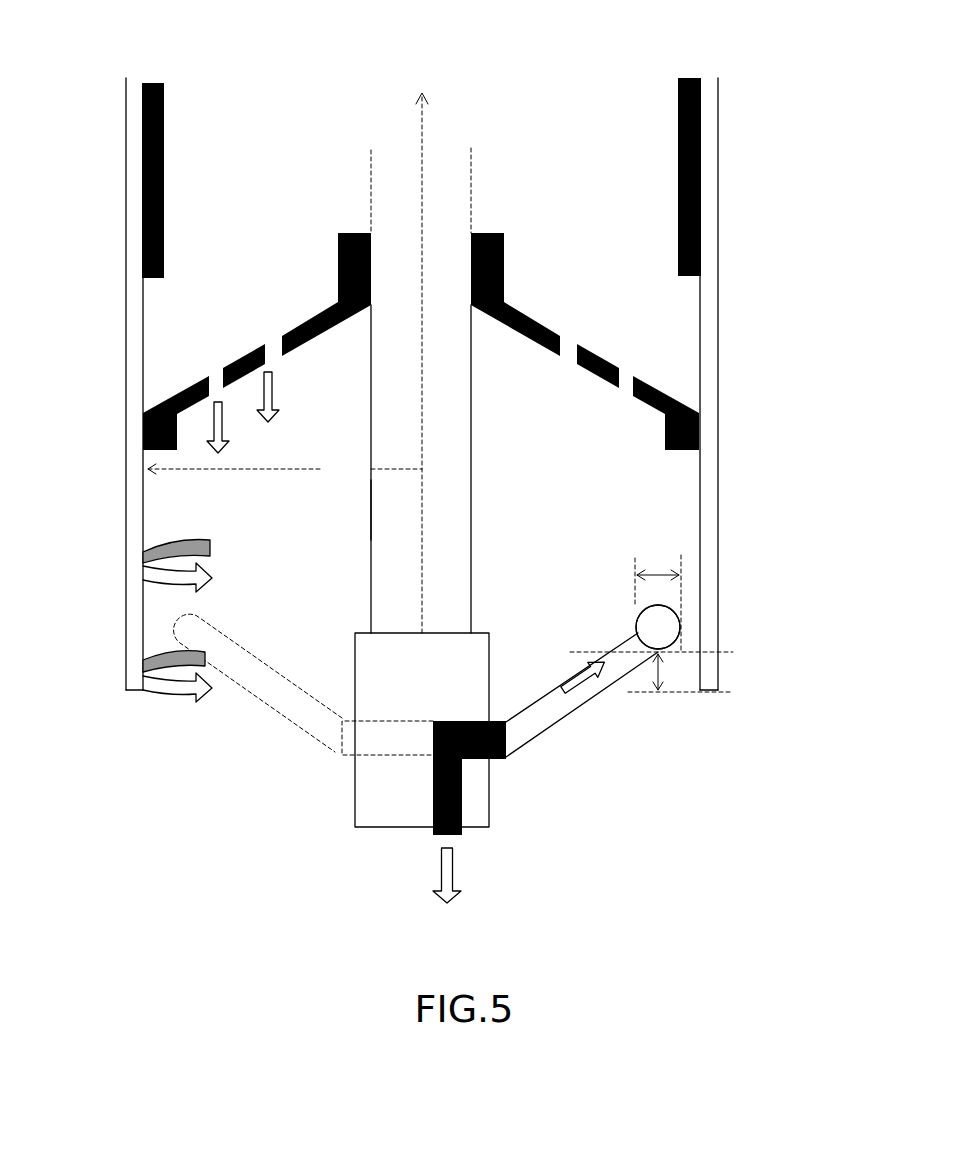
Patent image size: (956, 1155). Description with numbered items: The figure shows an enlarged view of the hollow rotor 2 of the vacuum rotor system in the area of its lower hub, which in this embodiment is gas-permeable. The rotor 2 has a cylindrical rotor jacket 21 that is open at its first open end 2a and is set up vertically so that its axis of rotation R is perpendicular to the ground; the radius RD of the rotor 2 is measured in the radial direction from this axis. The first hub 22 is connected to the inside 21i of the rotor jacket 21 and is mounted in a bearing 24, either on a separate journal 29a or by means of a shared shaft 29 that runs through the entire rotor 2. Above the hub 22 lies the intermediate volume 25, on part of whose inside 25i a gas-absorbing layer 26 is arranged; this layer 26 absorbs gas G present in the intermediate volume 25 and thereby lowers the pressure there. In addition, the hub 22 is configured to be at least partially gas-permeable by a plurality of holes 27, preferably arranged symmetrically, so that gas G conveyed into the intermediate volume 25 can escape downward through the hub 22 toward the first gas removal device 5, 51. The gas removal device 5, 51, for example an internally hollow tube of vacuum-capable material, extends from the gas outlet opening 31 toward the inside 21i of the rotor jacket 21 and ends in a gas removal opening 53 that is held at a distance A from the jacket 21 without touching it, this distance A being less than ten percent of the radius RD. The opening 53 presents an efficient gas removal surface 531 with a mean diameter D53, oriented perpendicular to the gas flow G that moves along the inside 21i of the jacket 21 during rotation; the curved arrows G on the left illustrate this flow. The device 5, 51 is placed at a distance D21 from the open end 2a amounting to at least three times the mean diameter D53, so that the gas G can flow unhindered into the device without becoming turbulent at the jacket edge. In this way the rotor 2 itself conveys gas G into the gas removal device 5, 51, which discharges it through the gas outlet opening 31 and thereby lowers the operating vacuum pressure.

The hollow rotor 2 is at (498, 117).
The first open end 2a is at (226, 745).
The rotor jacket 21 is at (118, 240).
The inside of the rotor jacket 21i is at (146, 518).
The first hub 22 is at (313, 298).
The bearing 24 is at (384, 691).
The intermediate volume 25 is at (534, 194).
The inside of the intermediate volume 25i is at (628, 482).
The gas-absorbing layer 26 is at (167, 126).
The holes 27 is at (216, 351).
The shared shaft 29 is at (395, 176).
The journal 29a is at (367, 505).
The gas outlet opening 31 is at (335, 731).
The gas removal device 5 is at (290, 701).
The first gas removal device 51 is at (547, 713).
The gas removal opening 53 is at (654, 626).
The gas removal surface 531 is at (603, 604).
The distance A is at (689, 587).
The distance from the open end D21 is at (665, 680).
The mean diameter D53 is at (656, 564).
The gas G is at (618, 722).
The axis of rotation R is at (423, 344).
The radius RD is at (285, 469).